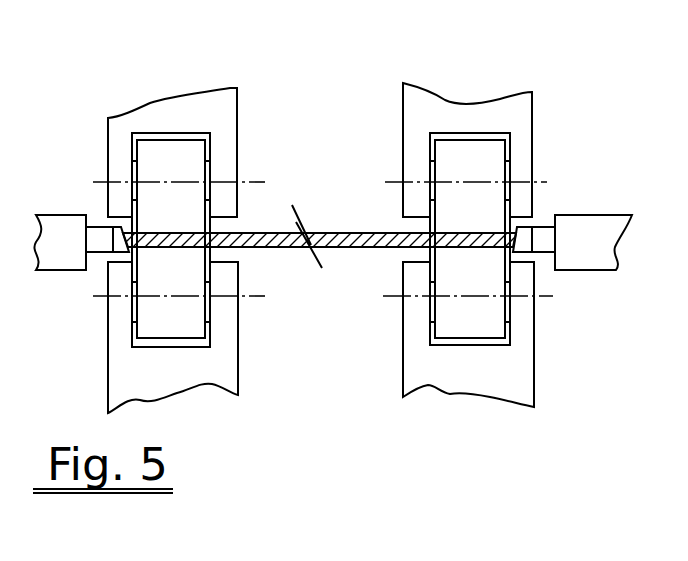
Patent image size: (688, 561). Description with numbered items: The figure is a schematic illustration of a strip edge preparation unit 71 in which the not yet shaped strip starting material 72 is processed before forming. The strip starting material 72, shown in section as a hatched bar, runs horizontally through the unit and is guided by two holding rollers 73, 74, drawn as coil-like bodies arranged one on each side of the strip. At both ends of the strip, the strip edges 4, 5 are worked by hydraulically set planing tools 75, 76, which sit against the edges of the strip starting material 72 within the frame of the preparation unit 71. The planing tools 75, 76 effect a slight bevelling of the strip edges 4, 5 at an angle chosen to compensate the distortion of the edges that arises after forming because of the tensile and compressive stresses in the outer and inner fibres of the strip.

The strip edge 4 is at (145, 238).
The strip edge 5 is at (405, 232).
The strip edge preparation unit 71 is at (593, 143).
The strip starting material 72 is at (343, 238).
The holding roller 73 is at (170, 161).
The holding roller 74 is at (450, 157).
The planing tool 75 is at (102, 237).
The planing tool 76 is at (542, 238).